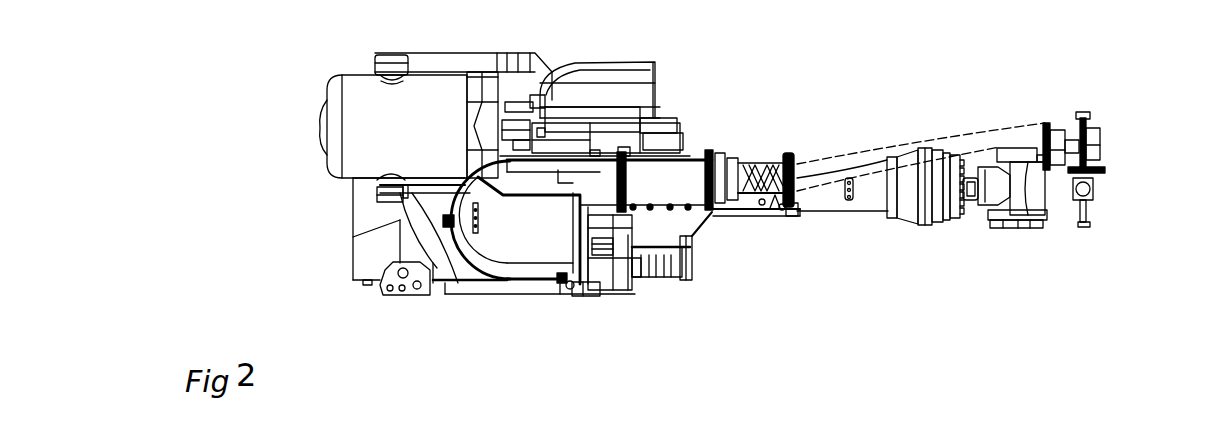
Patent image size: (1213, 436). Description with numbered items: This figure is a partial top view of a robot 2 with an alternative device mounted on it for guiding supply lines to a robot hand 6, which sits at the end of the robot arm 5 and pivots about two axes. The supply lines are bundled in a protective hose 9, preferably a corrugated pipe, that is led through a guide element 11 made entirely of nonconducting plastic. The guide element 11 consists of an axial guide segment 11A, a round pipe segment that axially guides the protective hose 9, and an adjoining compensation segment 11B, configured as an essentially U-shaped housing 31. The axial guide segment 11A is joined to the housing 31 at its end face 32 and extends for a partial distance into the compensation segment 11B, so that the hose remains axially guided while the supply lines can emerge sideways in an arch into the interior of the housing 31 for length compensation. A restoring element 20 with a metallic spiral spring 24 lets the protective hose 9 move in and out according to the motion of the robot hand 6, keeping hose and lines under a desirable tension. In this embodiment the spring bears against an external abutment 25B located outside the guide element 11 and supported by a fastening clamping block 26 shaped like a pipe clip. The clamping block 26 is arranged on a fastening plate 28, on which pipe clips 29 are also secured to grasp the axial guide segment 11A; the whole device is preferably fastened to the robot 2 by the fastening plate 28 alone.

The robot 2 is at (1079, 63).
The robot arm 5 is at (857, 212).
The robot hand 6 is at (1066, 212).
The protective hose 9 is at (938, 148).
The guide element 11 is at (565, 158).
The axial guide segment 11A is at (662, 183).
The compensation segment 11B is at (532, 235).
The restoring element 20 is at (775, 200).
The spiral spring 24 is at (752, 163).
The external abutment 25B is at (797, 160).
The fastening clamping block 26 is at (798, 208).
The fastening plate 28 is at (700, 240).
The pipe clips 29 is at (690, 200).
The U-shaped housing 31 is at (498, 236).
The end face 32 is at (603, 275).